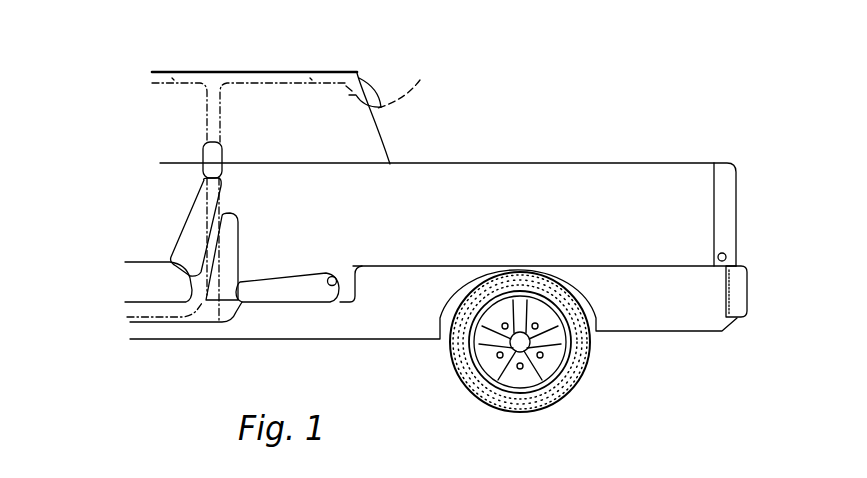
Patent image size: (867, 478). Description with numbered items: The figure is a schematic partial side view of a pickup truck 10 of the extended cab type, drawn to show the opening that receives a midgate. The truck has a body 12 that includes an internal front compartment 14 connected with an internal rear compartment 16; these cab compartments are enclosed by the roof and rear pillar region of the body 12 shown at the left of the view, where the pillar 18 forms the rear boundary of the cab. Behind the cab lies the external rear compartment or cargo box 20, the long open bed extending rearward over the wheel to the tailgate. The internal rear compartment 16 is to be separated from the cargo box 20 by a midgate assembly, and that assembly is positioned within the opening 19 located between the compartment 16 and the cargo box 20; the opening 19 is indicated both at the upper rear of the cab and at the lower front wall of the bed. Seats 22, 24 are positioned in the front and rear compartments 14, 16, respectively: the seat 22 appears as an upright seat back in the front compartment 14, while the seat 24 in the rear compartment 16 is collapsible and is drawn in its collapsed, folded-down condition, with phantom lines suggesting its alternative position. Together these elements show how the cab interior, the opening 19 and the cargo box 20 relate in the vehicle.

The pickup truck 10 is at (407, 217).
The body 12 is at (218, 70).
The internal front compartment 14 is at (183, 97).
The internal rear compartment 16 is at (319, 97).
The rear pillar 18 is at (359, 68).
The opening 19 is at (355, 272).
The cargo box 20 is at (503, 172).
The seat 22 is at (185, 218).
The seat 24 is at (310, 272).